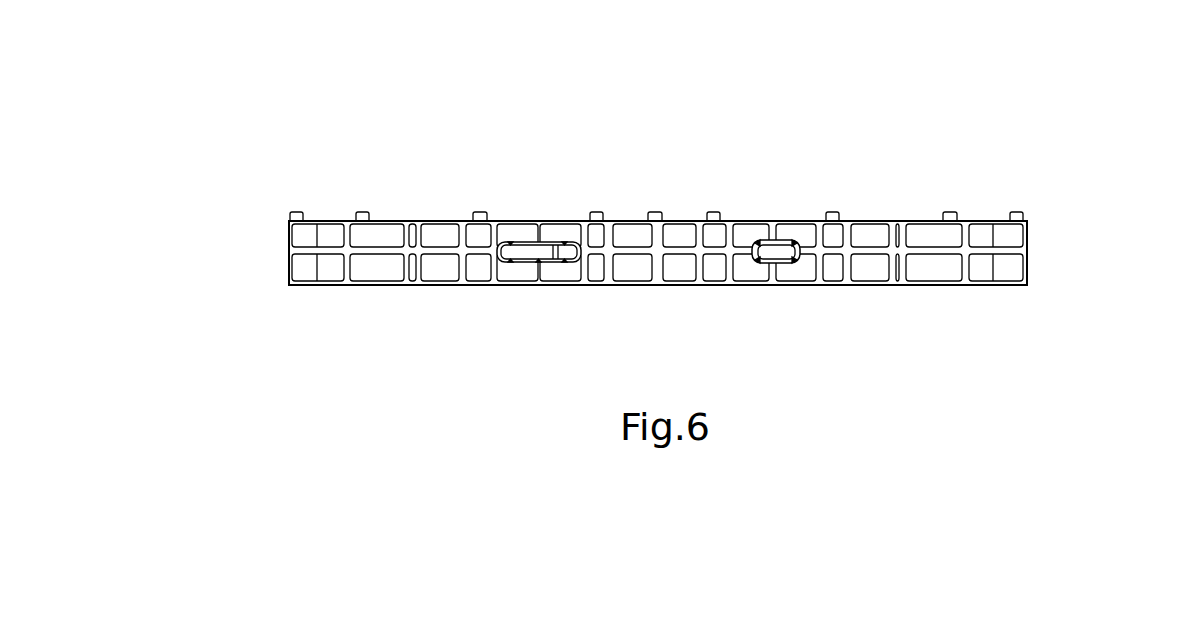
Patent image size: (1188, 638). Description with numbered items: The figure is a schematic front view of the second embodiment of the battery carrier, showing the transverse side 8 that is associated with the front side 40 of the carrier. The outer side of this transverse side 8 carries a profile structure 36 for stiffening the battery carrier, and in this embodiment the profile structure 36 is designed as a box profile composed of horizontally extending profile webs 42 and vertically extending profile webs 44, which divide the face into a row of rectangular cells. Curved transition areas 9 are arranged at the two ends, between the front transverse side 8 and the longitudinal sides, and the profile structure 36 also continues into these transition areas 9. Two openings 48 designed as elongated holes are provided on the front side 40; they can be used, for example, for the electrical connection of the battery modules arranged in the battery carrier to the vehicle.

The transverse side 8 is at (824, 168).
The curved transition area 9 is at (304, 271).
The profile structure 36 is at (863, 312).
The front side 40 is at (1099, 105).
The horizontally extending profile web 42 is at (635, 255).
The vertically extending profile web 44 is at (465, 242).
The opening 48 is at (532, 250).